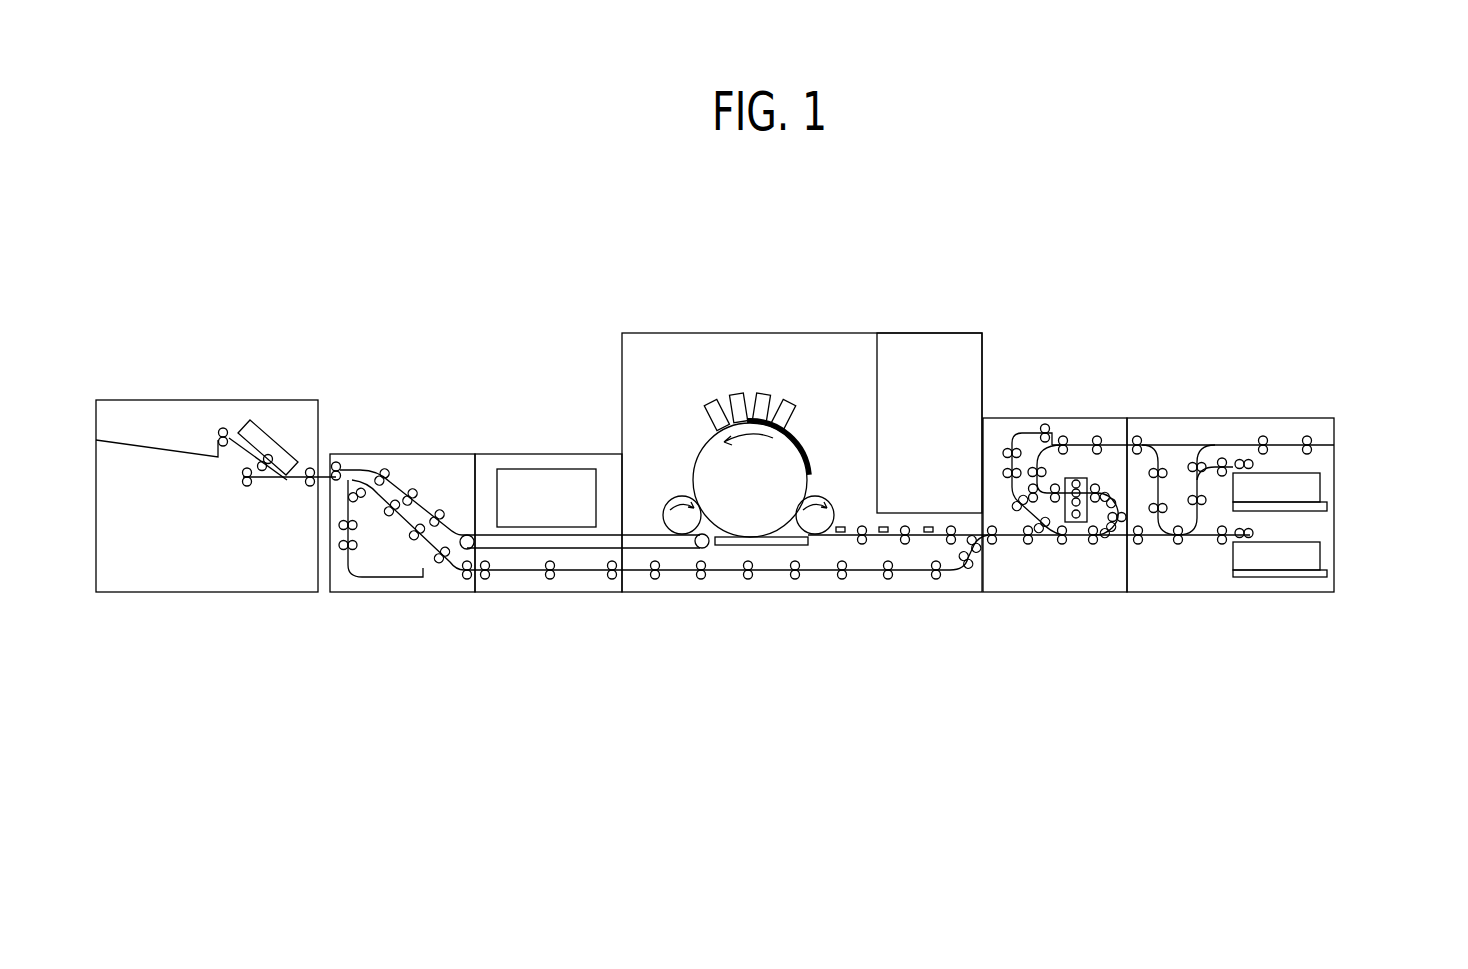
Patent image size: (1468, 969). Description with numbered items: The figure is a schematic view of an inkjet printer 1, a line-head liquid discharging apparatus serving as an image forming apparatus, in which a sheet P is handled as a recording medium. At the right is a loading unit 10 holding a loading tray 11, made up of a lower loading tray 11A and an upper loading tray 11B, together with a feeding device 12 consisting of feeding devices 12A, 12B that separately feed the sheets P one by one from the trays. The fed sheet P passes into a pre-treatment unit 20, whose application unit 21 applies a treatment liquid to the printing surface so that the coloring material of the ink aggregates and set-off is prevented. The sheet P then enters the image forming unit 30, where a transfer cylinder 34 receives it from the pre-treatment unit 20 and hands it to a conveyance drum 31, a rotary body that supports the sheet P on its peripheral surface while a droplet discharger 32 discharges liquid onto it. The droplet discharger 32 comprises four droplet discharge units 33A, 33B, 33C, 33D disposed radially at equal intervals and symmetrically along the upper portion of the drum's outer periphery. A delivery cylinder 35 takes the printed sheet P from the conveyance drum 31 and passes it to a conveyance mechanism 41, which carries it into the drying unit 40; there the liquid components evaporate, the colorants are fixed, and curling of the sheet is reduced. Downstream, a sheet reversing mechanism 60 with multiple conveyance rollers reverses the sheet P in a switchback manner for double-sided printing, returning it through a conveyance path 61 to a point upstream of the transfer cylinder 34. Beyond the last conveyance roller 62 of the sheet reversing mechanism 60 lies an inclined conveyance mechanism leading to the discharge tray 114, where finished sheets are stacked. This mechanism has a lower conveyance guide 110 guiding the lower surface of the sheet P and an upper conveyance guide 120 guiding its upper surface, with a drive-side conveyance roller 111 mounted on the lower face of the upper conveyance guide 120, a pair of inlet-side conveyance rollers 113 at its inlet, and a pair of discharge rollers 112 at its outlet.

The inkjet printer 1 is at (909, 277).
The loading unit 10 is at (1288, 460).
The loading tray 11 is at (1341, 523).
The lower loading tray 11A is at (1318, 558).
The upper loading tray 11B is at (1307, 490).
The feeding device 12 is at (1229, 436).
The feeding device 12A is at (1237, 522).
The feeding device 12B is at (1236, 462).
The pre-treatment unit 20 is at (1158, 465).
The application unit 21 is at (1077, 478).
The image forming unit 30 is at (916, 422).
The conveyance drum 31 is at (707, 462).
The droplet discharger 32 is at (750, 360).
The droplet discharge unit 33A is at (805, 394).
The droplet discharge unit 33B is at (762, 400).
The droplet discharge unit 33C is at (730, 400).
The droplet discharge unit 33D is at (712, 403).
The transfer cylinder 34 is at (825, 497).
The delivery cylinder 35 is at (677, 497).
The drying unit 40 is at (537, 455).
The conveyance mechanism 41 is at (590, 561).
The sheet reversing mechanism 60 is at (410, 455).
The conveyance path 61 is at (768, 572).
The last conveyance roller 62 is at (337, 462).
The lower conveyance guide 110 is at (248, 447).
The drive-side conveyance roller 111 is at (266, 455).
The pair of discharge rollers 112 is at (224, 430).
The pair of inlet-side conveyance rollers 113 is at (308, 485).
The discharge tray 114 is at (148, 445).
The upper conveyance guide 120 is at (283, 445).
The sheet P is at (797, 447).